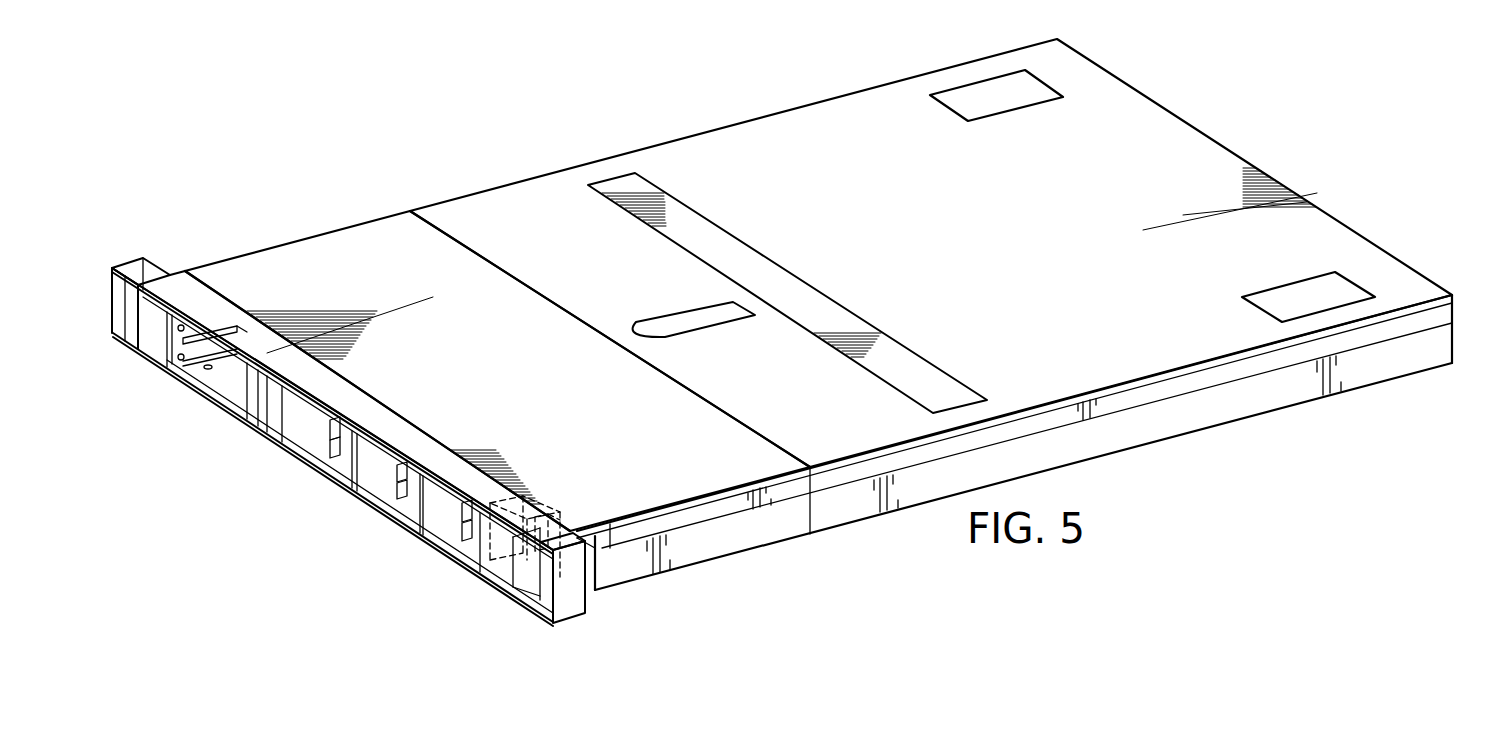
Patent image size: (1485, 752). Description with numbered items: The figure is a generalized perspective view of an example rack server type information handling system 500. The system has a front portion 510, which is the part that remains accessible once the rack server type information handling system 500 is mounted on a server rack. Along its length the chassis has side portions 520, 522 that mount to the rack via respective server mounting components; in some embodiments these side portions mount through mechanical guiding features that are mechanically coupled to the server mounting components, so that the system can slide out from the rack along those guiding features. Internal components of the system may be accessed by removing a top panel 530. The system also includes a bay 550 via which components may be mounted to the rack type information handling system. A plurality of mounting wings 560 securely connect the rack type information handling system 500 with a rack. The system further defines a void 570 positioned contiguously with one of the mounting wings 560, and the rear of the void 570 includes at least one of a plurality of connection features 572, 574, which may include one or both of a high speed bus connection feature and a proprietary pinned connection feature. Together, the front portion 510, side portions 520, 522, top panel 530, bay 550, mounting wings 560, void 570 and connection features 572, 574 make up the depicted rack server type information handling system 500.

The rack server type information handling system 500 is at (375, 99).
The front portion 510 is at (378, 400).
The side portion 520 is at (1193, 420).
The side portion 522 is at (506, 184).
The top panel 530 is at (268, 261).
The bay 550 is at (233, 388).
The mounting wing 560 is at (137, 277).
The void 570 is at (471, 586).
The connection feature 572 is at (540, 520).
The connection feature 574 is at (553, 522).